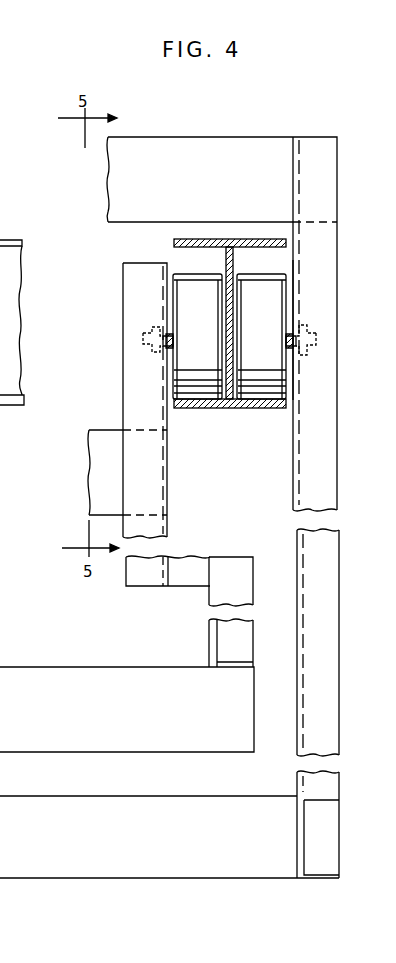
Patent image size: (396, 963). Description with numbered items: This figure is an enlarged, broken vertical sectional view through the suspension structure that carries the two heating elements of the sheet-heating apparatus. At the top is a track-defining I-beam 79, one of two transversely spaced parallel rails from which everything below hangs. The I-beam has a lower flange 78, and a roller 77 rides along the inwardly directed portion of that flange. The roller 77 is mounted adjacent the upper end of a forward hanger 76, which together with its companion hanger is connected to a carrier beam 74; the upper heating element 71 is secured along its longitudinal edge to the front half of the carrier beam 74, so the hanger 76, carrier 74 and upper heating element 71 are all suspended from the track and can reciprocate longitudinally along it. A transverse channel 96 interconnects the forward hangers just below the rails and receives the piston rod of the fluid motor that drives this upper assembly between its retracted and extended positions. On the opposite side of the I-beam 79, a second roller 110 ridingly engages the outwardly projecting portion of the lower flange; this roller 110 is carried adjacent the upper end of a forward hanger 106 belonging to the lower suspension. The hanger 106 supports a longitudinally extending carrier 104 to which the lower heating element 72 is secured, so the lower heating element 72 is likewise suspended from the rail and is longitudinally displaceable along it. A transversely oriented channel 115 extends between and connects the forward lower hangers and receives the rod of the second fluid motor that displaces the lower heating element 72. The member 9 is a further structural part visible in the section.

The vertical member 9 is at (12, 301).
The upper heating element 71 is at (45, 723).
The lower heating element 72 is at (45, 843).
The carrier beam 74 is at (213, 648).
The forward hanger 76 is at (218, 558).
The roller 77 is at (197, 397).
The lower flange 78 is at (215, 408).
The track-defining I-beam 79 is at (229, 240).
The transverse channel 96 is at (92, 498).
The carrier 104 is at (341, 799).
The forward hanger 106 is at (337, 137).
The roller 110 is at (290, 281).
The channel 115 is at (215, 143).